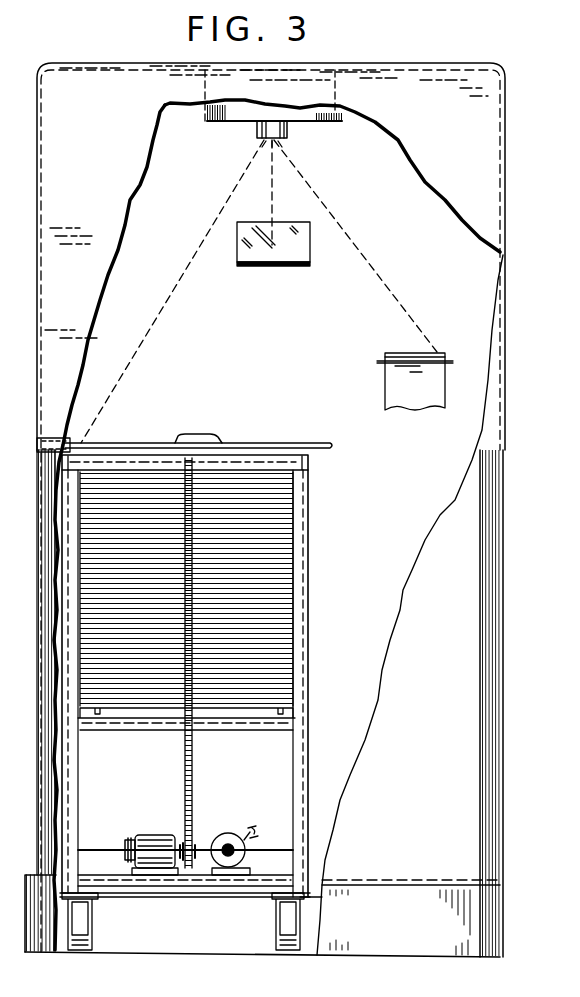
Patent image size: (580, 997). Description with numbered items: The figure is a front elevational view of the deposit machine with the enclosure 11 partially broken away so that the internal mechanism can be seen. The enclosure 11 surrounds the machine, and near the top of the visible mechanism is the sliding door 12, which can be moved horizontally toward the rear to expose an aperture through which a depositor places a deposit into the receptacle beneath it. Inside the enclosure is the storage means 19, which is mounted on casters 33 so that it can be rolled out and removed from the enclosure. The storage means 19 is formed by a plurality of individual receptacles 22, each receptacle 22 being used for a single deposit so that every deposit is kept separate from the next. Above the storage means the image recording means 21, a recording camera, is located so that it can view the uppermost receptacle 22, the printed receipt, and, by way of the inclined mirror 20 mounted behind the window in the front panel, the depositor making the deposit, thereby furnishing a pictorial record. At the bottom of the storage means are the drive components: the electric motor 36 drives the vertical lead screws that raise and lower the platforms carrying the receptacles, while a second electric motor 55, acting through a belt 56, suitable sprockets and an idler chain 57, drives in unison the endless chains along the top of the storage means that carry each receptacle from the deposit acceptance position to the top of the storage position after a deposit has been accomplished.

The enclosure 11 is at (449, 137).
The door 12 is at (205, 436).
The storage means 19 is at (310, 520).
The inclined mirror 20 is at (304, 258).
The image recording means 21 is at (298, 124).
The receptacles 22 is at (290, 592).
The casters 33 is at (88, 923).
The electric motor 36 is at (226, 836).
The electric motor 55 is at (155, 835).
The belt 56 is at (126, 840).
The idler chain 57 is at (192, 755).